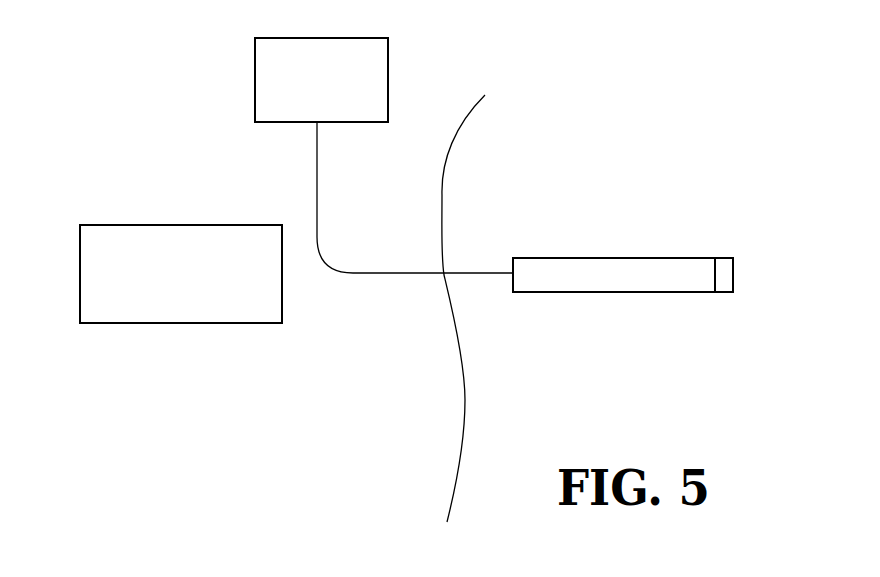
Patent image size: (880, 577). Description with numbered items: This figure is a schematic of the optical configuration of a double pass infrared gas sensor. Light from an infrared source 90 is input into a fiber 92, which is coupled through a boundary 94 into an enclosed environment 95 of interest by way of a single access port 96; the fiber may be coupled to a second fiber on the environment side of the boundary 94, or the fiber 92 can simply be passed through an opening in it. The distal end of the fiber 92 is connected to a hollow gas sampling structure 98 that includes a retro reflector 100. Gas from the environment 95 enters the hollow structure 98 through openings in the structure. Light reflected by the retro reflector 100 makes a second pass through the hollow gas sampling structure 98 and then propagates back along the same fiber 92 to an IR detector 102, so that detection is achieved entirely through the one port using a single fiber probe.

The infrared source 90 is at (255, 84).
The fiber 92 is at (390, 278).
The boundary 94 is at (440, 188).
The enclosed environment 95 is at (615, 381).
The single access port 96 is at (443, 273).
The hollow gas sampling structure 98 is at (578, 258).
The retro reflector 100 is at (728, 258).
The IR detector 102 is at (155, 225).